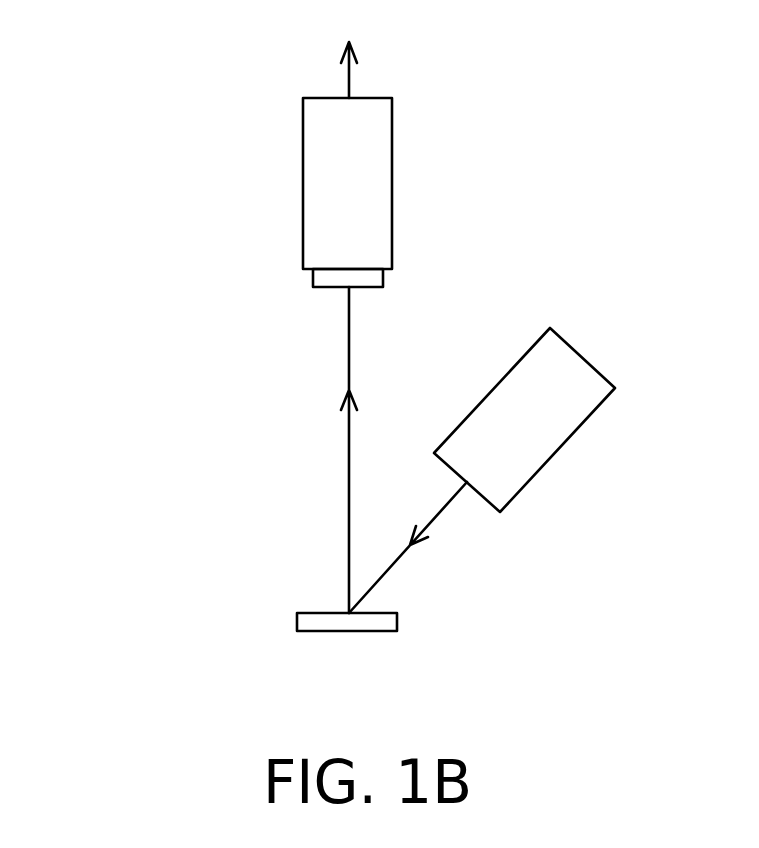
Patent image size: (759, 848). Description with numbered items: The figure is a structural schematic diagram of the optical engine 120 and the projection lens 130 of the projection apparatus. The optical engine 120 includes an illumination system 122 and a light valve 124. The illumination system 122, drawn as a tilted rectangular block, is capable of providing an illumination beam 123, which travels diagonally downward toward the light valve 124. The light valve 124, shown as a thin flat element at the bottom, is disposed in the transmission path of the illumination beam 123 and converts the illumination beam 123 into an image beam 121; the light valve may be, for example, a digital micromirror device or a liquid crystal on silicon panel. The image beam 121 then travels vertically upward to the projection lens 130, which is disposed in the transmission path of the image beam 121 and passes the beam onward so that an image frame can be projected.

The optical engine 120 is at (557, 655).
The image beam 121 is at (349, 449).
The illumination system 122 is at (547, 433).
The illumination beam 123 is at (395, 568).
The light valve 124 is at (305, 621).
The projection lens 130 is at (317, 188).